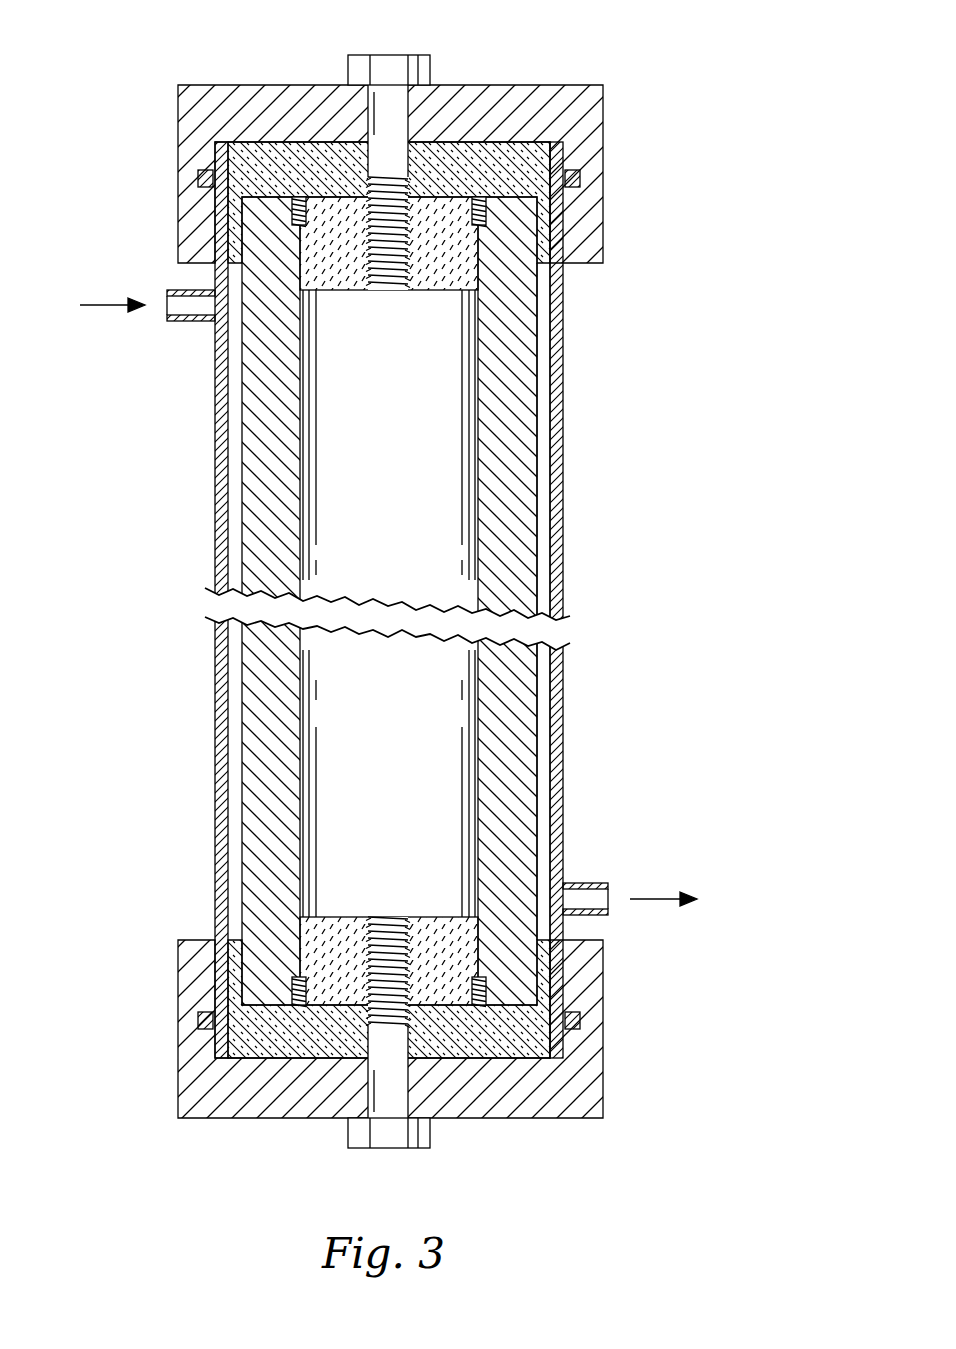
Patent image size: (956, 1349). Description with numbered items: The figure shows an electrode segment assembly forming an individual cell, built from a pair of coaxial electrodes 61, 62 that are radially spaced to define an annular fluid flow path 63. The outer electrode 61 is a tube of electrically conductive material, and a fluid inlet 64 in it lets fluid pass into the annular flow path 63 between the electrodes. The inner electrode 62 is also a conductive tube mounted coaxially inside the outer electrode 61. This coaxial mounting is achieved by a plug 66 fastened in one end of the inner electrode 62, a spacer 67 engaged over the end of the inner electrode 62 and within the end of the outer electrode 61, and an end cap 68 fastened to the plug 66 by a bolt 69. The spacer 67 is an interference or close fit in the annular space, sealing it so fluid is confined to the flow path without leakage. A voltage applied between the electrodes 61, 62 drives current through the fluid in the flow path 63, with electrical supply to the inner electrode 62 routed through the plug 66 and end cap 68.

The outer electrode 61 is at (216, 470).
The inner electrode 62 is at (514, 371).
The annular fluid flow path 63 is at (540, 470).
The fluid inlet 64 is at (172, 322).
The plug 66 is at (331, 276).
The spacer 67 is at (490, 160).
The end cap 68 is at (603, 116).
The bolt 69 is at (392, 58).